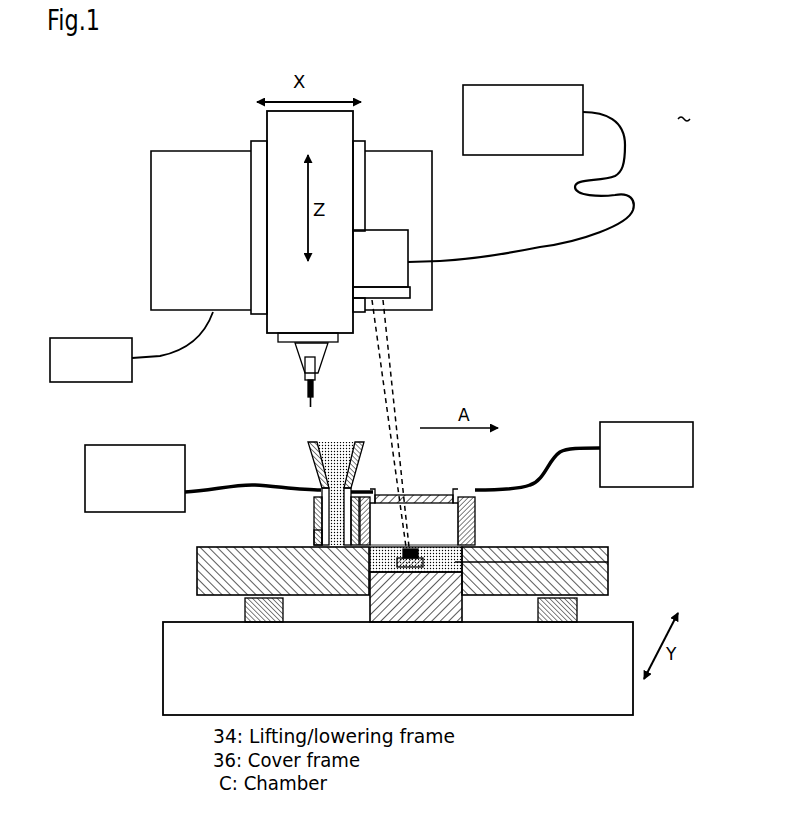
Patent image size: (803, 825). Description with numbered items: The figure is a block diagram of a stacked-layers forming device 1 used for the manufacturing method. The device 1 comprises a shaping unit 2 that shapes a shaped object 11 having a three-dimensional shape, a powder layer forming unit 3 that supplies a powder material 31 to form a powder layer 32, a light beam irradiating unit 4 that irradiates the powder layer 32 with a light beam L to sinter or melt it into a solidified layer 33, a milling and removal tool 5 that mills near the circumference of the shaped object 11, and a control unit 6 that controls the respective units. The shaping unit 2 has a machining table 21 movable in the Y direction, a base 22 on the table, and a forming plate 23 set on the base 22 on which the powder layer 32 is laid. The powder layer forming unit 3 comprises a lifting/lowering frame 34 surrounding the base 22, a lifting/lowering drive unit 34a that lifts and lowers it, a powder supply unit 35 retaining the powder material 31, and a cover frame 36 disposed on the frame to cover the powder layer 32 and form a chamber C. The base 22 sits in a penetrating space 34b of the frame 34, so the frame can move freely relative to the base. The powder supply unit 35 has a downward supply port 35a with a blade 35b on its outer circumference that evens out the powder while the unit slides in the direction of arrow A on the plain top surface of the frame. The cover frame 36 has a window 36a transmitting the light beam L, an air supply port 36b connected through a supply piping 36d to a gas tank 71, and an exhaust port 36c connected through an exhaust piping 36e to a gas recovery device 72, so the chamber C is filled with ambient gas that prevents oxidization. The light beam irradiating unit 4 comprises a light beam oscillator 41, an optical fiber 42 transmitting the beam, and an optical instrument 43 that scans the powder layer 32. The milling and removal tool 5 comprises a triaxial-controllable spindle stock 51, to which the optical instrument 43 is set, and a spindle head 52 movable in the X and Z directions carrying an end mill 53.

The stacked-layers forming device 1 is at (684, 106).
The shaping unit 2 is at (152, 637).
The powder layer forming unit 3 is at (247, 528).
The light beam irradiating unit 4 is at (514, 269).
The milling and removal tool 5 is at (191, 133).
The control unit 6 is at (85, 340).
The shaped object 11 is at (418, 546).
The machining table 21 is at (163, 668).
The base 22 is at (462, 605).
The forming plate 23 is at (442, 553).
The powder material 31 is at (337, 455).
The powder layer 32 is at (395, 558).
The solidified layer 33 is at (405, 548).
The lifting/lowering frame 34 is at (195, 562).
The lifting/lowering drive unit 34a is at (243, 609).
The penetrating space 34b is at (608, 562).
The powder supply unit 35 is at (311, 485).
The supply port 35a is at (316, 523).
The blade 35b is at (315, 537).
The cover frame 36 is at (432, 498).
The window 36a is at (408, 496).
The air supply port 36b is at (367, 488).
The exhaust port 36c is at (463, 488).
The supply piping 36d is at (233, 486).
The exhaust piping 36e is at (553, 465).
The light beam oscillator 41 is at (550, 95).
The optical fiber 42 is at (540, 247).
The optical instrument 43 is at (393, 233).
The spindle stock 51 is at (365, 141).
The spindle head 52 is at (298, 355).
The end mill 53 is at (305, 391).
The gas tank 71 is at (113, 455).
The gas recovery device 72 is at (633, 427).
The light beam L is at (393, 382).
The chamber C is at (456, 515).